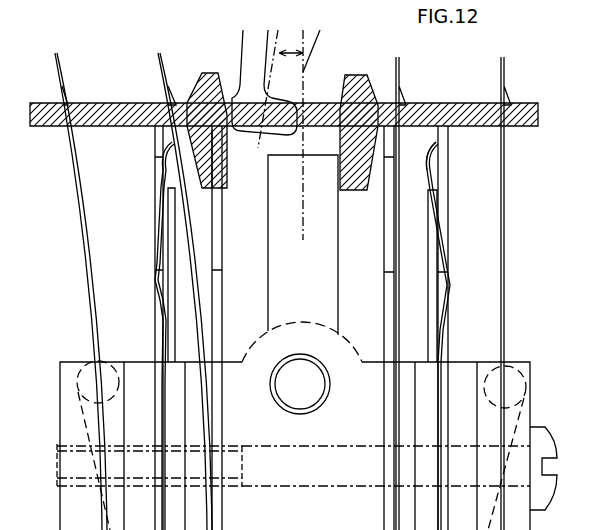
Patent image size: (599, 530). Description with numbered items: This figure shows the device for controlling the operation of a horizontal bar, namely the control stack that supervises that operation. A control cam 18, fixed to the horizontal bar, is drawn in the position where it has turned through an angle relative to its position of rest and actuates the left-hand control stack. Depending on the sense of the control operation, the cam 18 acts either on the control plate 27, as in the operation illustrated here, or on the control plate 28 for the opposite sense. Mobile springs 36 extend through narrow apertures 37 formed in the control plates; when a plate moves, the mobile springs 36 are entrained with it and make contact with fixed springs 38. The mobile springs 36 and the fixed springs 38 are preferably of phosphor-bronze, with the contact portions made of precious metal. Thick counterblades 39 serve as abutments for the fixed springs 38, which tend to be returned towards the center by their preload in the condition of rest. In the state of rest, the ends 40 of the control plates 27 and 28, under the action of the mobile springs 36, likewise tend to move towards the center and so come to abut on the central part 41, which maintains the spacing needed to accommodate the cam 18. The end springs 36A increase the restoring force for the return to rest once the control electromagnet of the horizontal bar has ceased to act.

The control cam 18 is at (244, 45).
The control plate 27 is at (100, 103).
The control plate 28 is at (432, 104).
The mobile springs 36 is at (196, 222).
The end springs 36A is at (80, 185).
The narrow apertures 37 is at (163, 128).
The fixed springs 38 is at (163, 203).
The thick counterblades 39 is at (433, 279).
The ends of the control plates 40 is at (346, 116).
The central part 41 is at (329, 248).